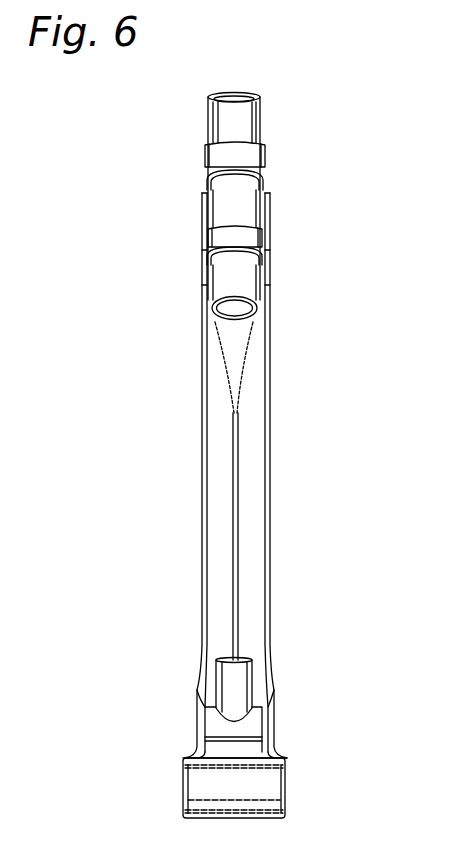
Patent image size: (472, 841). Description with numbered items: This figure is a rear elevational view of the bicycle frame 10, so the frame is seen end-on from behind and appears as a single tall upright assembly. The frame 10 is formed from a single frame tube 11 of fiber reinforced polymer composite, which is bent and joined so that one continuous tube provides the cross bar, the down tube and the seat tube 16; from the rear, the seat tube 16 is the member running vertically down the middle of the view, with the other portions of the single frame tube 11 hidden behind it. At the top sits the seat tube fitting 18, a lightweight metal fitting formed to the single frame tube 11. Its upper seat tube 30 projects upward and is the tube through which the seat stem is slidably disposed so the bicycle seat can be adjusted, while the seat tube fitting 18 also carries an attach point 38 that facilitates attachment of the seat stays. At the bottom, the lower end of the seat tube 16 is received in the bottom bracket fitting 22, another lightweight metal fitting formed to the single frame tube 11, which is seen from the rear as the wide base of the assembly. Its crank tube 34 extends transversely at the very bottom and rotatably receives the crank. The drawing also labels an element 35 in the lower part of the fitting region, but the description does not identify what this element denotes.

The bicycle frame 10 is at (292, 378).
The single frame tube 11 is at (218, 452).
The seat tube 16 is at (253, 493).
The seat tube fitting 18 is at (215, 150).
The bottom bracket fitting 22 is at (268, 740).
The upper seat tube 30 is at (255, 123).
The crank tube 34 is at (287, 788).
The cup 35 is at (225, 675).
The attach point 38 is at (218, 726).